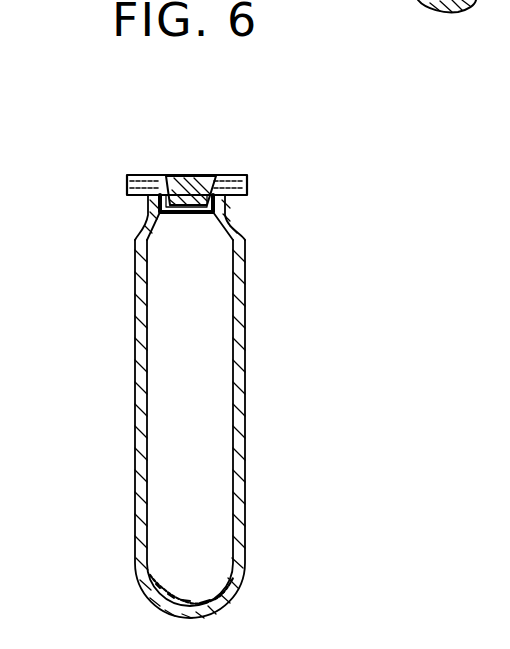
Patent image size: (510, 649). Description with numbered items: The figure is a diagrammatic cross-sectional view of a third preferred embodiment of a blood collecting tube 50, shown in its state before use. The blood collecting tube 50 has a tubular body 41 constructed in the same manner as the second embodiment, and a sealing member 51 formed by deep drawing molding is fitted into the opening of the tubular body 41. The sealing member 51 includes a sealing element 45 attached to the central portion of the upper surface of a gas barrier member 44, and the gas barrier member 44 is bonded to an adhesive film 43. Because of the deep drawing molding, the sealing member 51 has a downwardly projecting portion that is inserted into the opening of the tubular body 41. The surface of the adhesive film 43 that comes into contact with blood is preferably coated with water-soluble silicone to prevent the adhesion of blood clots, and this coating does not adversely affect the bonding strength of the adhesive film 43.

The tubular body 41 is at (245, 363).
The adhesive film 43 is at (190, 215).
The gas barrier member 44 is at (143, 174).
The sealing element 45 is at (190, 175).
The blood collecting tube 50 is at (303, 281).
The sealing member 51 is at (222, 175).